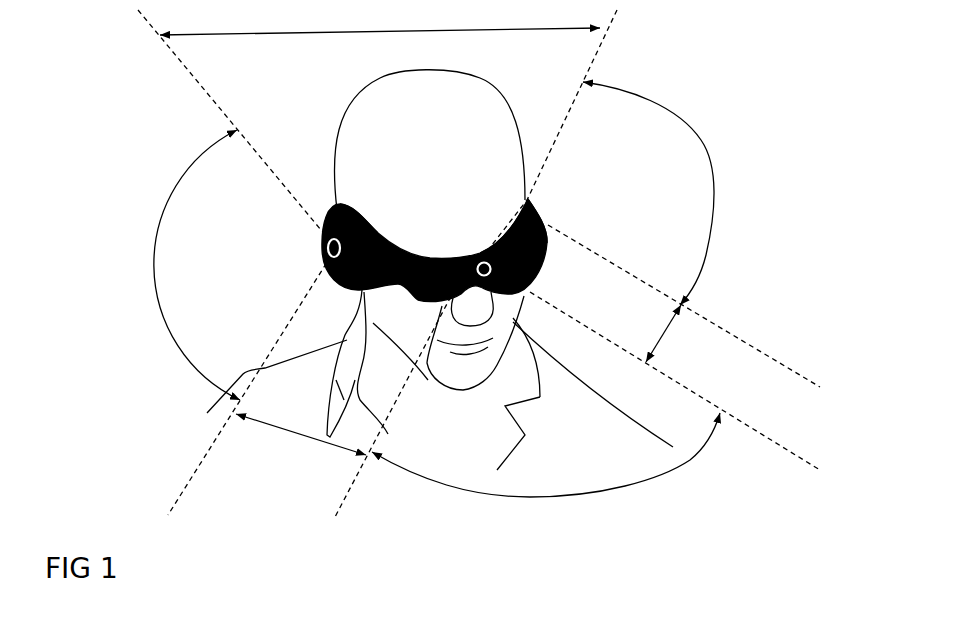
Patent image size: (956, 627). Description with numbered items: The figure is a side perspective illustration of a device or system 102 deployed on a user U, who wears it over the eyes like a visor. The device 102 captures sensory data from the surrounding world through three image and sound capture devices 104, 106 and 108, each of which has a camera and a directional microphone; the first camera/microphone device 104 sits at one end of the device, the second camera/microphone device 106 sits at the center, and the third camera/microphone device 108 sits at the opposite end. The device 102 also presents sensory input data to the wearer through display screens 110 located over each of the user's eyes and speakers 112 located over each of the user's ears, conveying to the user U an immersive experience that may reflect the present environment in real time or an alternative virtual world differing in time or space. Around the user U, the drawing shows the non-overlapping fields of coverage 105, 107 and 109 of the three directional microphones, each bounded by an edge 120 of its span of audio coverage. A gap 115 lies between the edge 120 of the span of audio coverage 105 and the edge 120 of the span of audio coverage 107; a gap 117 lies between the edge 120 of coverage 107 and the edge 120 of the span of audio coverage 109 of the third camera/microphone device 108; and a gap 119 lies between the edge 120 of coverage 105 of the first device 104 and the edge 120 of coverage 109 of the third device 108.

The user U is at (367, 115).
The device or system 102 is at (335, 208).
The image and sound capture device 104 is at (326, 249).
The field of coverage 105 is at (162, 190).
The image and sound capture device 106 is at (479, 252).
The field of coverage 107 is at (689, 463).
The image and sound capture device 108 is at (532, 197).
The field of coverage 109 is at (688, 124).
The display screen 110 is at (506, 246).
The speaker 112 is at (355, 207).
The gap 115 is at (304, 437).
The gap 117 is at (657, 342).
The gap 119 is at (437, 30).
The edge of the span of audio coverage 120 is at (727, 328).